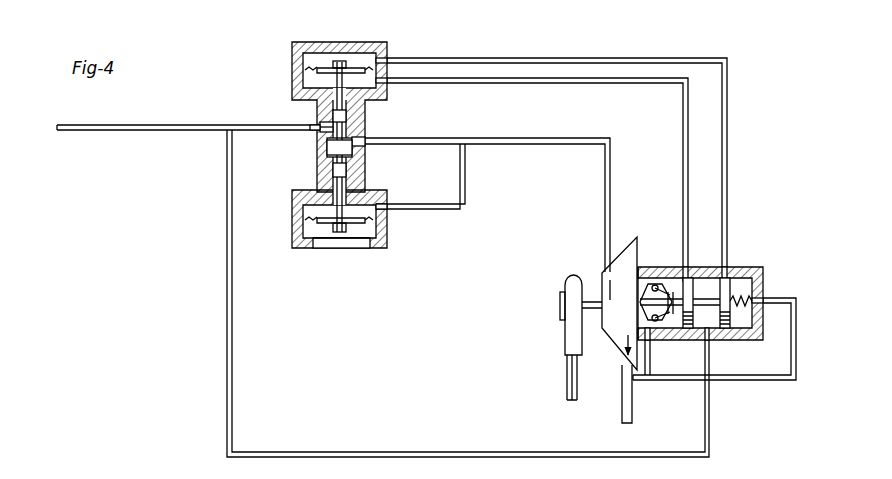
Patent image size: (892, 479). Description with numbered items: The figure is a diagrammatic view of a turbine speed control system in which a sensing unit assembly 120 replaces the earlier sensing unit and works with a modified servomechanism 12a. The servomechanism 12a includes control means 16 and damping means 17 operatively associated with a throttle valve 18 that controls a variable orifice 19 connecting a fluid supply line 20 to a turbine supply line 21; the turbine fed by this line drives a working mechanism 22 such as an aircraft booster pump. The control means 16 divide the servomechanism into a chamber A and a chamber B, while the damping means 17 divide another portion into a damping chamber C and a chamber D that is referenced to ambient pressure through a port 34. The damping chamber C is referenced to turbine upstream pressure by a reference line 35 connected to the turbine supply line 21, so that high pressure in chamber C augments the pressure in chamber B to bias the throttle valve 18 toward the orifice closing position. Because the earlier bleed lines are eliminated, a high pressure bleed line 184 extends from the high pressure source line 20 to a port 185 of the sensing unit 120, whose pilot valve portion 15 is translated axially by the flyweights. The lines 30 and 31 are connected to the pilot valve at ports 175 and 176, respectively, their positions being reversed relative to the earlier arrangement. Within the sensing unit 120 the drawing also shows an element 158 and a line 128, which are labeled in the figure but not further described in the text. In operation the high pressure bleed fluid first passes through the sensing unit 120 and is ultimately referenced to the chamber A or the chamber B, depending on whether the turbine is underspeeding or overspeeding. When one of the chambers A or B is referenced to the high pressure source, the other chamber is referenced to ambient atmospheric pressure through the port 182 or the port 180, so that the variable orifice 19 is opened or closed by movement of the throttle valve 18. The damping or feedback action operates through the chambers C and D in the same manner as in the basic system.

The modified servomechanism 12a is at (375, 38).
The control means 16 is at (334, 64).
The chamber B is at (372, 56).
The chamber A is at (368, 80).
The throttle valve 18 is at (345, 100).
The variable orifice 19 is at (328, 124).
The fluid supply line 20 is at (128, 124).
The turbine supply line 21 is at (546, 142).
The reference line 35 is at (464, 155).
The line 30 is at (684, 109).
The line 31 is at (727, 117).
The damping chamber C is at (372, 212).
The chamber D is at (308, 228).
The port 34 is at (330, 248).
The damping means 17 is at (352, 230).
The working mechanism 22 is at (562, 285).
The pilot valve portion 15 is at (598, 335).
The port 175 is at (682, 268).
The port 176 is at (738, 268).
The sensing unit assembly 120 is at (765, 279).
The port 180 is at (768, 300).
The piston 158 is at (728, 322).
The port 185 is at (658, 325).
The pipe 128 is at (655, 383).
The port 182 is at (631, 395).
The high pressure bleed line 184 is at (424, 454).